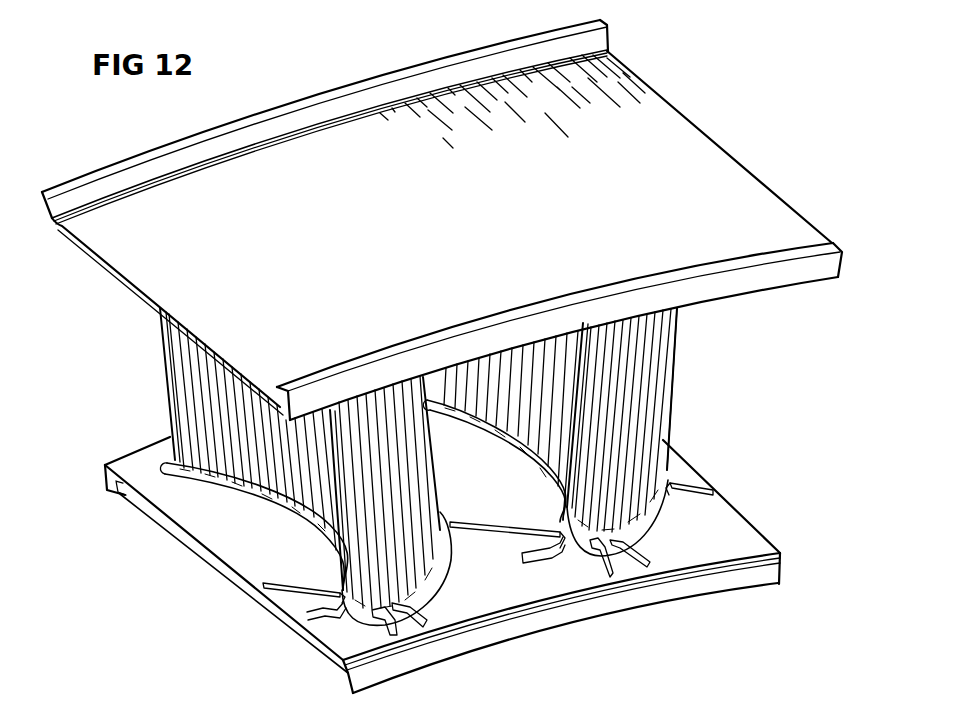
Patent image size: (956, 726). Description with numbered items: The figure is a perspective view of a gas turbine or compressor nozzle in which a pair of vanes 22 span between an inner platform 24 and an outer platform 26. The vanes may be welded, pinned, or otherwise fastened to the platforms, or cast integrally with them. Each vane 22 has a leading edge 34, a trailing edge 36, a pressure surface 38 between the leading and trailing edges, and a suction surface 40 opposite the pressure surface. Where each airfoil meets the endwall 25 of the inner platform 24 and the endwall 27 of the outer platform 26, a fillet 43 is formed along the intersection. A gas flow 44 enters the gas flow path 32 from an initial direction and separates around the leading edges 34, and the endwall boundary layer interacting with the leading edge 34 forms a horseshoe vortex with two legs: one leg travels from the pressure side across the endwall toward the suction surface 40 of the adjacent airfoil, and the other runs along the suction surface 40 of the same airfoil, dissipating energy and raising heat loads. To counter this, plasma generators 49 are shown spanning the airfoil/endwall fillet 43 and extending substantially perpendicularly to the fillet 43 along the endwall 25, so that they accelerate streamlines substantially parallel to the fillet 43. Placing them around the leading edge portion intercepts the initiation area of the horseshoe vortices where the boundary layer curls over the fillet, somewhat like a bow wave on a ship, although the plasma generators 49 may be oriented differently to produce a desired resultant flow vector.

The vane 22 is at (683, 377).
The inner platform 24 is at (241, 595).
The endwall 25 is at (215, 540).
The outer platform 26 is at (709, 130).
The endwall 27 is at (115, 277).
The gas flow path 32 is at (513, 369).
The leading edge 34 is at (339, 426).
The trailing edge 36 is at (160, 337).
The pressure surface 38 is at (260, 418).
The suction surface 40 is at (395, 423).
The fillet 43 is at (662, 518).
The gas flow 44 is at (485, 588).
The plasma generators 49 is at (497, 523).